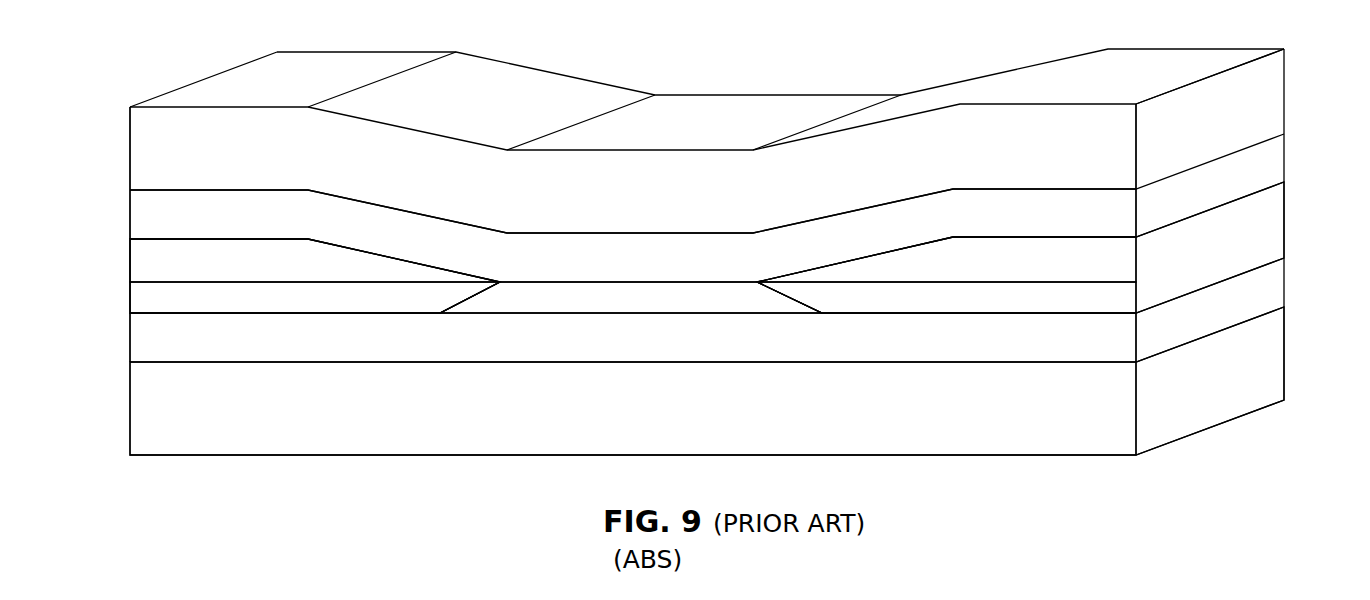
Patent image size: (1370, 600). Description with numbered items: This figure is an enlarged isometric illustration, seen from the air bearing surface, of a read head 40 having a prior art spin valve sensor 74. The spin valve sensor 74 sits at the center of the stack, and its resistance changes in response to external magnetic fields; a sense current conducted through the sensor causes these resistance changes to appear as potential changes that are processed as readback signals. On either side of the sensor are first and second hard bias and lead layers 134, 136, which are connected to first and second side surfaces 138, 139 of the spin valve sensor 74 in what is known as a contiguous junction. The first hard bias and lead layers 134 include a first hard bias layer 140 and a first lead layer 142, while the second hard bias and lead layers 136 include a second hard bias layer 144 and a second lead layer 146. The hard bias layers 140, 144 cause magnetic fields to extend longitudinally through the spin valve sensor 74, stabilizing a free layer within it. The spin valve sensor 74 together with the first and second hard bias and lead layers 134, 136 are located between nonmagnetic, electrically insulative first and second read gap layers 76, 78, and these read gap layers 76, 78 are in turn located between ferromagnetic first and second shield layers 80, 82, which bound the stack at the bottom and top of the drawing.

The read head 40 is at (800, 50).
The spin valve sensor 74 is at (542, 278).
The first read gap layer 76 is at (515, 355).
The second read gap layer 78 is at (372, 220).
The first shield layer 80 is at (300, 435).
The second shield layer 82 is at (560, 85).
The first hard bias and lead layers 134 is at (130, 240).
The second hard bias and lead layers 136 is at (1290, 182).
The first side surface 138 is at (462, 303).
The second side surface 139 is at (803, 303).
The first hard bias layer 140 is at (173, 300).
The first lead layer 142 is at (172, 252).
The second hard bias layer 144 is at (1083, 298).
The second lead layer 146 is at (1085, 250).